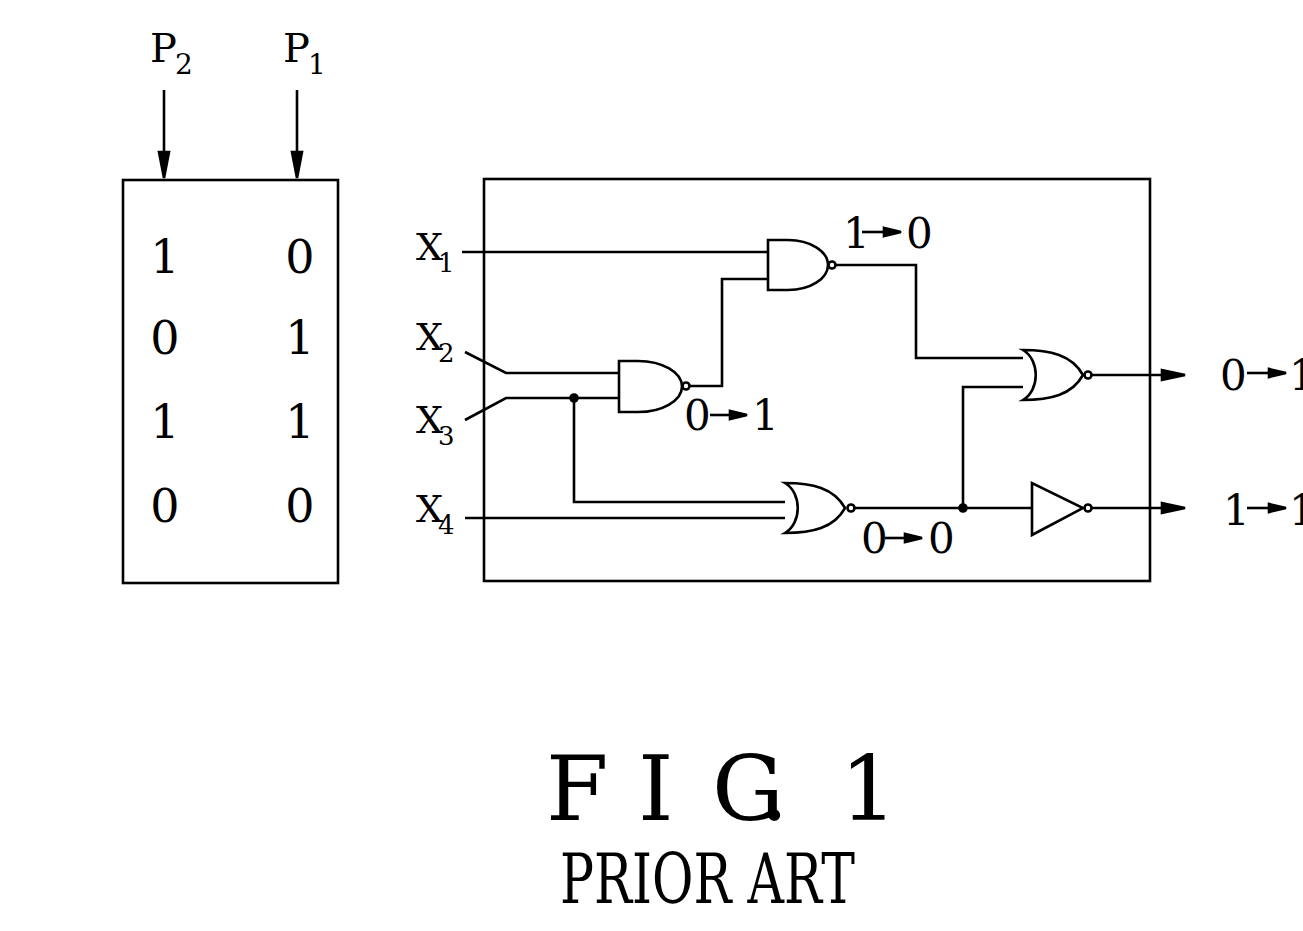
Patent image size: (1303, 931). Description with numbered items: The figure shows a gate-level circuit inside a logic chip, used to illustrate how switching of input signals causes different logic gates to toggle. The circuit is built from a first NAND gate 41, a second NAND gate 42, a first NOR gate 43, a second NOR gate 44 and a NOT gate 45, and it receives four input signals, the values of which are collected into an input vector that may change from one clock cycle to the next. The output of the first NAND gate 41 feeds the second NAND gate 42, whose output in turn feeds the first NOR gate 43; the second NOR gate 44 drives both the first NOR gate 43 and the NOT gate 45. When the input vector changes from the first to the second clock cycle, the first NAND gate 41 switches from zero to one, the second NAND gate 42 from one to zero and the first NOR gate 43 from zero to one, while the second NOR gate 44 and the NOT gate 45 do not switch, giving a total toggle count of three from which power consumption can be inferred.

The first NAND gate 41 is at (656, 361).
The second NAND gate 42 is at (797, 240).
The first NOR gate 43 is at (1060, 350).
The second NOR gate 44 is at (806, 533).
The NOT gate 45 is at (1058, 522).